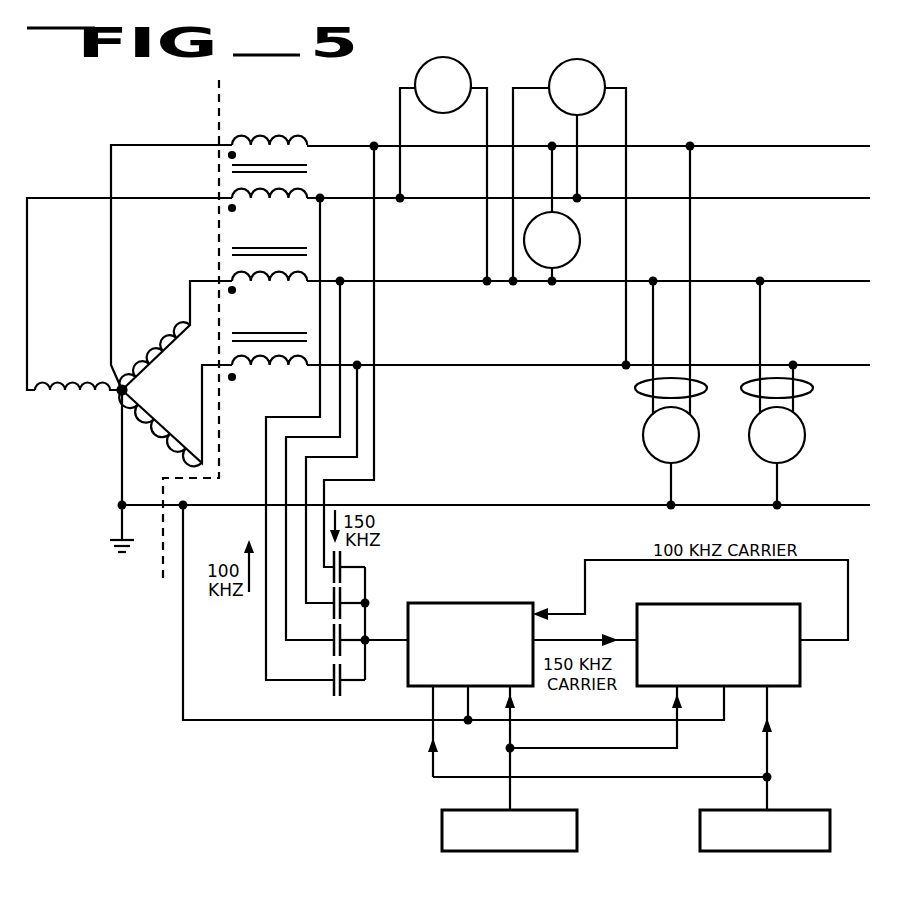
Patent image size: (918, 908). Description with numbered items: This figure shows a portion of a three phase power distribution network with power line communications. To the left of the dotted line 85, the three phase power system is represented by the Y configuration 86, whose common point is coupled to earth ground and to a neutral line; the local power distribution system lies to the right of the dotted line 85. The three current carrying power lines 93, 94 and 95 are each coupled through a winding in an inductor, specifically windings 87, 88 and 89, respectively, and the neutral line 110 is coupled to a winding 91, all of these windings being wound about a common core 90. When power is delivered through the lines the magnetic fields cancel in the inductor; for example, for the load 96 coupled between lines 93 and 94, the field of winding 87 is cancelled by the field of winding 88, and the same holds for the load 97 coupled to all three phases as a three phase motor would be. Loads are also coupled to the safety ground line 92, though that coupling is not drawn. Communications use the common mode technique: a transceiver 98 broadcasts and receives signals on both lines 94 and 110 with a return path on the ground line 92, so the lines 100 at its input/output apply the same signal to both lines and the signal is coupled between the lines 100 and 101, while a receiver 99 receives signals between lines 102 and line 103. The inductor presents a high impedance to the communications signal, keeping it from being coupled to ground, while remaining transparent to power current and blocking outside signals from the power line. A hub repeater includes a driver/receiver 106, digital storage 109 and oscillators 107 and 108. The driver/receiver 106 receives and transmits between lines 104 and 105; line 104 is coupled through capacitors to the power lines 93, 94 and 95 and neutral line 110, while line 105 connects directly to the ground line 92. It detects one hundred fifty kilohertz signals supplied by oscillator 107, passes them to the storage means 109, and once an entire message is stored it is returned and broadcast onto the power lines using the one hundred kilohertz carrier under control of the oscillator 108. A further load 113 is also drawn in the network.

The dotted line 85 is at (224, 102).
The Y configuration 86 is at (93, 363).
The winding 87 is at (232, 197).
The winding 88 is at (280, 283).
The winding 89 is at (256, 372).
The common core 90 is at (308, 163).
The winding 91 is at (268, 128).
The ground line 92 is at (430, 503).
The line 93 is at (401, 205).
The line 94 is at (394, 284).
The line 95 is at (414, 368).
The load 96 is at (465, 68).
The load 97 is at (603, 71).
The transceiver 98 is at (648, 452).
The receiver 99 is at (806, 437).
The lines 100 is at (638, 393).
The line 101 is at (672, 483).
The lines 102 is at (812, 390).
The line 103 is at (778, 483).
The line 104 is at (390, 643).
The line 105 is at (463, 722).
The driver/receiver 106 is at (468, 603).
The oscillator 107 is at (540, 851).
The oscillator 108 is at (767, 851).
The storage means 109 is at (737, 681).
The neutral line 110 is at (728, 148).
The load 113 is at (578, 253).